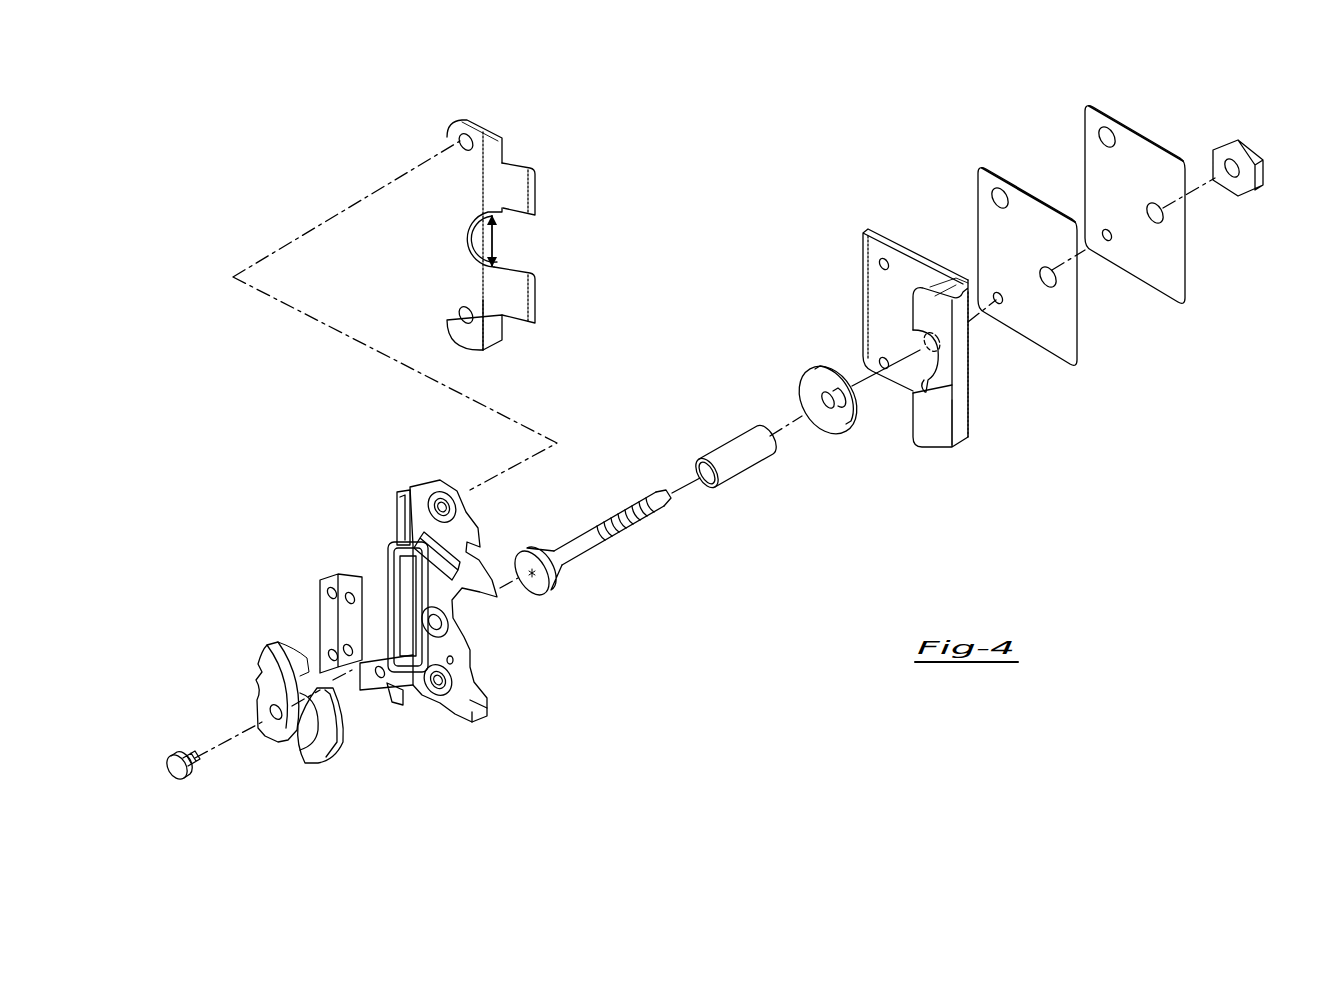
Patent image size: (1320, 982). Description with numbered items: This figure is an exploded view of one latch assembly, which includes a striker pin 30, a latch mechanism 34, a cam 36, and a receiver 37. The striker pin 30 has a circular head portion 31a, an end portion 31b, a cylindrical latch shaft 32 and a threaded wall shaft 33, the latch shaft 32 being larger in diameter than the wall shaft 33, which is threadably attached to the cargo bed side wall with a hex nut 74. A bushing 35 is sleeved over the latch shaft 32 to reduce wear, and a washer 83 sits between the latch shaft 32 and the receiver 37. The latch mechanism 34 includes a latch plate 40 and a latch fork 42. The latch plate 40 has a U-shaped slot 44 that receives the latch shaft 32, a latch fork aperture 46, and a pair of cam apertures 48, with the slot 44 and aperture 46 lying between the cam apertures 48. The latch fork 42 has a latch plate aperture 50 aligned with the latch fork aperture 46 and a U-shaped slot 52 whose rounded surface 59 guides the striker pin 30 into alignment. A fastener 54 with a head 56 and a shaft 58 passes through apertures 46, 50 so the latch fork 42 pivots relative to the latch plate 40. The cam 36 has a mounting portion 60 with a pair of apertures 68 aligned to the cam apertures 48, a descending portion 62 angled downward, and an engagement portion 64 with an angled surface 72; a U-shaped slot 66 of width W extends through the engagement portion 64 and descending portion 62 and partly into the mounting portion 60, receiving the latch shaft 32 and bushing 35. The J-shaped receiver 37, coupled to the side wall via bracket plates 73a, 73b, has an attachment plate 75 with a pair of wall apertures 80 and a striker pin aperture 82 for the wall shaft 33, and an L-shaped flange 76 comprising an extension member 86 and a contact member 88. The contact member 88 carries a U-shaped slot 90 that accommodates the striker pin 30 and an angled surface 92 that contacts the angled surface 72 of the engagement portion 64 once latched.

The striker pin 30 is at (608, 570).
The head portion 31a is at (558, 570).
The end portion 31b is at (672, 498).
The latch shaft 32 is at (585, 543).
The wall shaft 33 is at (632, 503).
The latch mechanism 34 is at (342, 770).
The bushing 35 is at (730, 447).
The cam 36 is at (524, 128).
The receiver 37 is at (932, 472).
The latch plate 40 is at (355, 523).
The latch fork 42 is at (252, 632).
The U-shaped slot 44 is at (472, 616).
The latch fork aperture 46 is at (440, 660).
The cam apertures 48 is at (438, 505).
The latch plate aperture 50 is at (273, 710).
The U-shaped slot 52 is at (312, 718).
The fastener 54 is at (182, 786).
The head 56 is at (172, 758).
The shaft 58 is at (200, 768).
The rounded surface 59 is at (302, 640).
The mounting portion 60 is at (445, 192).
The descending portion 62 is at (496, 342).
The engagement portion 64 is at (540, 176).
The U-shaped slot 66 is at (525, 243).
The apertures 68 is at (460, 140).
The angled surface 72 is at (528, 200).
The bracket plate 73a is at (1012, 200).
The bracket plate 73b is at (1130, 147).
The hex nut 74 is at (1222, 158).
The attachment plate 75 is at (860, 225).
The flange 76 is at (982, 412).
The wall apertures 80 is at (880, 262).
The striker pin aperture 82 is at (928, 340).
The washer 83 is at (810, 375).
The extension member 86 is at (962, 425).
The contact member 88 is at (918, 430).
The U-shaped slot 90 is at (940, 388).
The angled surface 92 is at (930, 295).